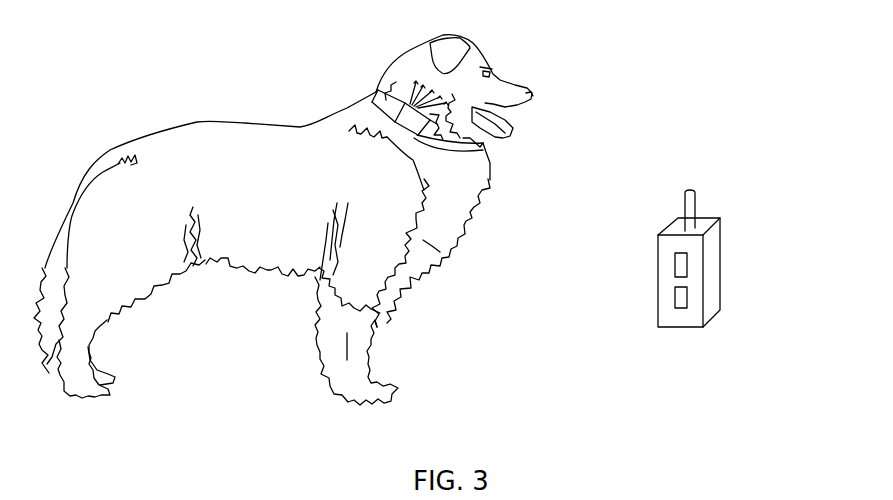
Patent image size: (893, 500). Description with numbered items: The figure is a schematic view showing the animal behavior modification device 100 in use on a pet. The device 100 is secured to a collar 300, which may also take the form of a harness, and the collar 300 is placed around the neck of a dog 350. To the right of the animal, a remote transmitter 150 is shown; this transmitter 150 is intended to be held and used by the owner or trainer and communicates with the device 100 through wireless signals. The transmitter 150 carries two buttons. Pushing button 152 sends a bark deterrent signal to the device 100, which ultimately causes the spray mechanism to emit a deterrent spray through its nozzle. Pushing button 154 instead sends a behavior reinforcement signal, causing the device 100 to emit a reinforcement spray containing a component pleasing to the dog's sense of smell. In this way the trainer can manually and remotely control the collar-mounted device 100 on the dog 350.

The animal behavior modification device 100 is at (490, 163).
The collar 300 is at (376, 92).
The dog 350 is at (427, 243).
The remote transmitter 150 is at (710, 267).
The button 152 is at (675, 267).
The button 154 is at (677, 293).